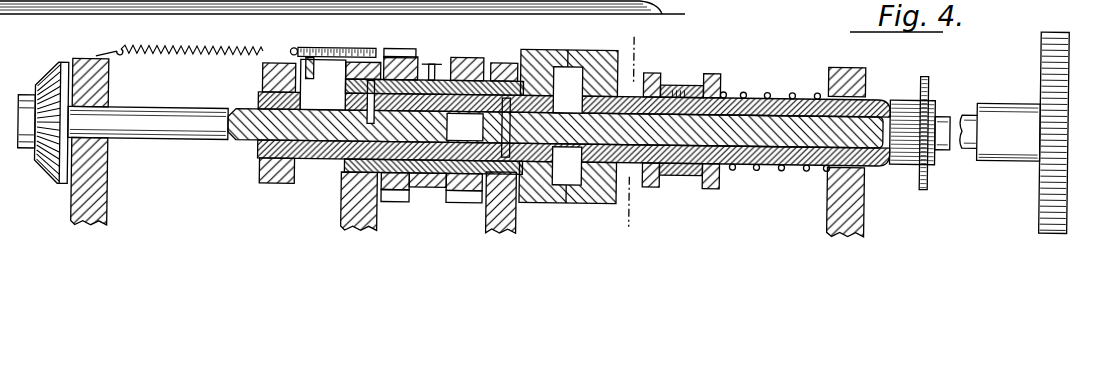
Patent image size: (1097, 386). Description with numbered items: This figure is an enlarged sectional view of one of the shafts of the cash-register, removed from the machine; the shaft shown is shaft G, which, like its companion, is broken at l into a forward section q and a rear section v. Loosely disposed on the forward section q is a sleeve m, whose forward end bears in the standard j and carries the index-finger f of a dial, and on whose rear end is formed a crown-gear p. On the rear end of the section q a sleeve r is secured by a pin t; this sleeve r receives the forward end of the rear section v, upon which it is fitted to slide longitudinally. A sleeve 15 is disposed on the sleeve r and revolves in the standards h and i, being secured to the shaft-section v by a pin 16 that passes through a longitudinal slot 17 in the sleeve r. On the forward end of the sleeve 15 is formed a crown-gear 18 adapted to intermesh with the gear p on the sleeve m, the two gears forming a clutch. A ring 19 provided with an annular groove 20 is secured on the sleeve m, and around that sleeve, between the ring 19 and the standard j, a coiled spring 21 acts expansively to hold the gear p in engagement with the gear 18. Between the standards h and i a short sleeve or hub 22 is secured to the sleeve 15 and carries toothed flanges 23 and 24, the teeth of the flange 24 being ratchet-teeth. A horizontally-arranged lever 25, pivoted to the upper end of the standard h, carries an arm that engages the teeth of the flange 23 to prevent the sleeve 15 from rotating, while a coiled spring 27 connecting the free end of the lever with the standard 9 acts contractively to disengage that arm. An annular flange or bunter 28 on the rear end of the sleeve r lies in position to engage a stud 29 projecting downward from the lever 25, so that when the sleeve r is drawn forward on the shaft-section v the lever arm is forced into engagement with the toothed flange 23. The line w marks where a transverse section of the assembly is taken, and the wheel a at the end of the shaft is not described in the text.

The standard 9 is at (110, 198).
The rear section of shaft v is at (200, 142).
The forward section of shaft q is at (688, 135).
The sleeve r is at (258, 98).
The longitudinal slot 17 is at (320, 99).
The break of shaft l is at (465, 126).
The pin t is at (477, 200).
The annular flange or bunter 28 is at (262, 73).
The coiled spring 27 is at (181, 56).
The horizontally-arranged lever 25 is at (335, 46).
The stud 29 is at (313, 67).
The pin 16 is at (400, 46).
The standard h is at (368, 60).
The toothed flange 23 is at (405, 55).
The short sleeve or hub 22 is at (434, 60).
The toothed flange 24 is at (458, 54).
The sleeve 15 is at (495, 59).
The standard i is at (521, 53).
The crown-gear p is at (600, 46).
The crown-gear 18 is at (551, 46).
The section line w is at (643, 134).
The annular groove 20 is at (676, 75).
The ring 19 is at (720, 76).
The coiled spring 21 is at (780, 82).
The standard j is at (866, 205).
The sleeve m is at (897, 88).
The index-finger f is at (927, 181).
The shaft G is at (963, 140).
The hand wheel a is at (1038, 51).